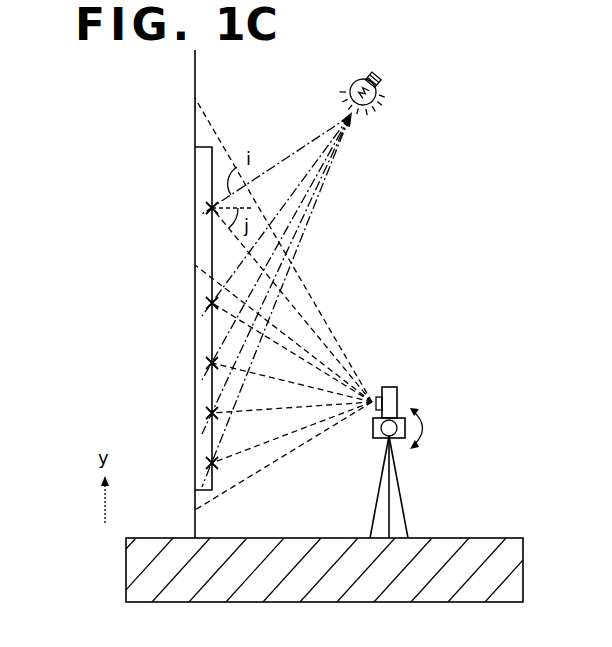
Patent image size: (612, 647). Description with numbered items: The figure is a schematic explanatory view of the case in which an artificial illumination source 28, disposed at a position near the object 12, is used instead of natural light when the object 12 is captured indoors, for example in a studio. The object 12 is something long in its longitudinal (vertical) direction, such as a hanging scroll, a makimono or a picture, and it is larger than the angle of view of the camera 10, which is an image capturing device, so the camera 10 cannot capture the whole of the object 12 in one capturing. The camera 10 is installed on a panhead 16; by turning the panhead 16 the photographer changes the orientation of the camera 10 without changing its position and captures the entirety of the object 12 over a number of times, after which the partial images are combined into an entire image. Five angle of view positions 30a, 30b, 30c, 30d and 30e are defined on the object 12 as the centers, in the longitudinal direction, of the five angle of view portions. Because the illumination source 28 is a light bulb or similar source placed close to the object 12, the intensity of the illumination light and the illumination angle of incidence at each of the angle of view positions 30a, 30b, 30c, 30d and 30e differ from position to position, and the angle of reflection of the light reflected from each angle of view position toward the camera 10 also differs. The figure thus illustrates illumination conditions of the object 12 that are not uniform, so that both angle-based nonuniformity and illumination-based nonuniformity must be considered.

The camera 10 is at (397, 392).
The object 12 is at (202, 172).
The panhead 16 is at (405, 440).
The illumination source 28 is at (378, 90).
The angle of view position 30a is at (207, 465).
The angle of view position 30b is at (207, 415).
The angle of view position 30c is at (207, 365).
The angle of view position 30d is at (207, 305).
The angle of view position 30e is at (207, 210).